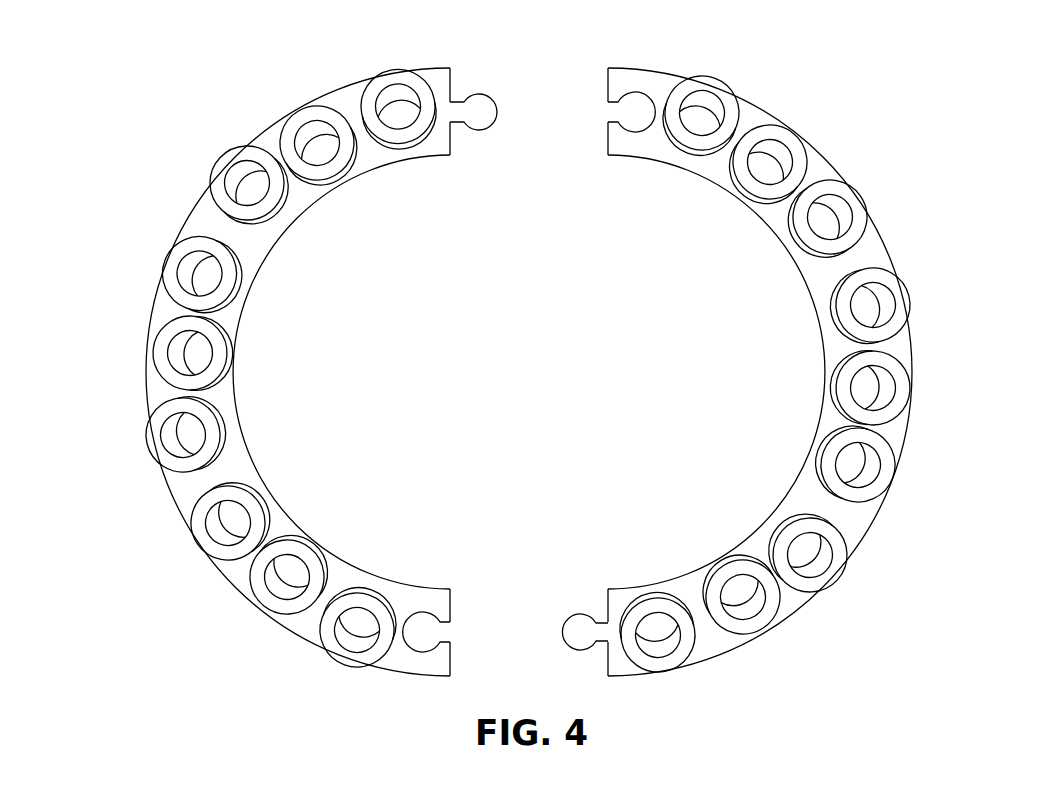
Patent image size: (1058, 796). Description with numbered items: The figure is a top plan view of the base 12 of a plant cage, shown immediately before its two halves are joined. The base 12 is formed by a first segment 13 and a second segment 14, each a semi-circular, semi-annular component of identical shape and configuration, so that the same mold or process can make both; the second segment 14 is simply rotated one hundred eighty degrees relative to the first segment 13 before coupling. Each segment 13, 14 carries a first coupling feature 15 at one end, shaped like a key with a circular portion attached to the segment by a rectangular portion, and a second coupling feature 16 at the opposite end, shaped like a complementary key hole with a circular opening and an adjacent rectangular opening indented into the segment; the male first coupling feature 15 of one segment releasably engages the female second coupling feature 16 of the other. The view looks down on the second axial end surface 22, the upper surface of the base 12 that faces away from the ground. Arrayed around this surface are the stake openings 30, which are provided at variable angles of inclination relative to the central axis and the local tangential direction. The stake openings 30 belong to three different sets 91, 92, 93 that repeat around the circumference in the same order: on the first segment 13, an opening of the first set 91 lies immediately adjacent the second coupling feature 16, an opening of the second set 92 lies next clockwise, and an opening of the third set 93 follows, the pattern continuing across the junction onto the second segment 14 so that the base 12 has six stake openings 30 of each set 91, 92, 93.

The base 12 is at (246, 100).
The first segment 13 is at (208, 178).
The second segment 14 is at (863, 538).
The first coupling feature 15 is at (482, 131).
The second coupling feature 16 is at (446, 632).
The second axial end surface 22 is at (242, 462).
The stake openings 30 is at (486, 355).
The first set 91 is at (178, 437).
The second set 92 is at (170, 348).
The third set 93 is at (185, 272).